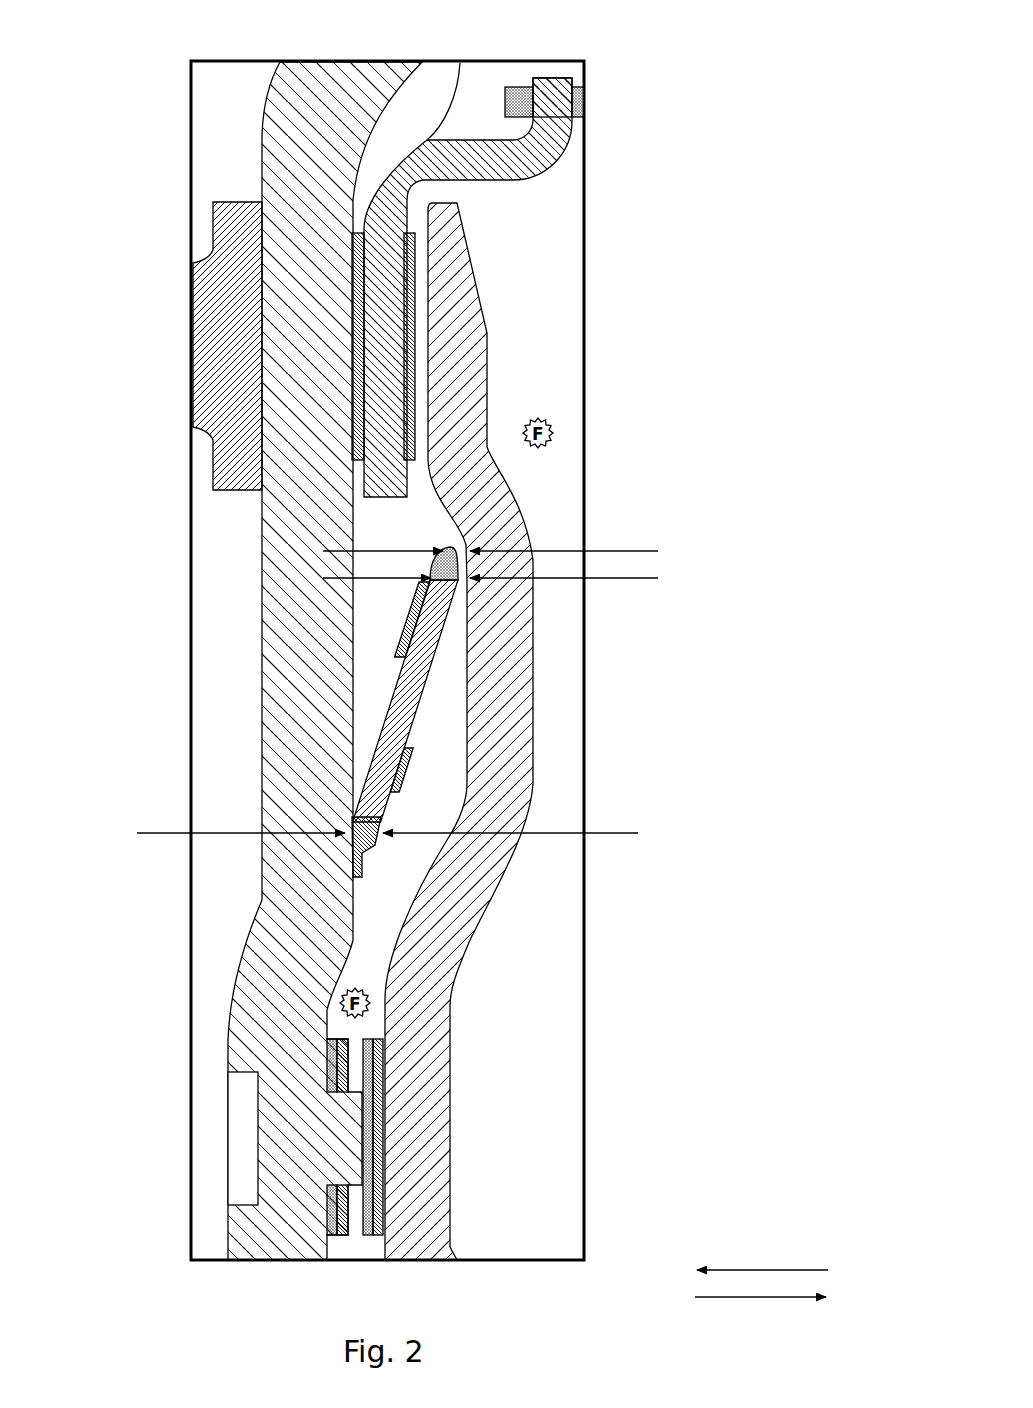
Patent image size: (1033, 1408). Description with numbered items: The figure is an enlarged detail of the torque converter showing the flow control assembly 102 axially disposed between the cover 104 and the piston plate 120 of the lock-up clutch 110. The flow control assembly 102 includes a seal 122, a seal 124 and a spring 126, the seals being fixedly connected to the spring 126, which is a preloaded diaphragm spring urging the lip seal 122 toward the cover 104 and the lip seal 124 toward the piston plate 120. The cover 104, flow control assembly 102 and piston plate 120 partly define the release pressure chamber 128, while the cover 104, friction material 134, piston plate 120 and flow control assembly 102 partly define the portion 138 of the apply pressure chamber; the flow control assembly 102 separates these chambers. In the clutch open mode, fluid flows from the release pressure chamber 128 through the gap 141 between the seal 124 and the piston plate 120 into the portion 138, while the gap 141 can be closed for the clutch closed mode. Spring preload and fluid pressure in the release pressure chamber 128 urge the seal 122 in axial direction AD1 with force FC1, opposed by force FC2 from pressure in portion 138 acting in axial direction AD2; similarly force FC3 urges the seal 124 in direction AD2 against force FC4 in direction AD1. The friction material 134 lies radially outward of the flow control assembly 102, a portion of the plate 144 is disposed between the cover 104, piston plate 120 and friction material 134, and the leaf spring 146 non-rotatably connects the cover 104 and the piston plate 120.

The flow control assembly 102 is at (438, 719).
The cover 104 is at (260, 935).
The lock-up clutch 110 is at (484, 249).
The piston plate 120 is at (457, 975).
The seal 122 is at (407, 772).
The seal 124 is at (410, 637).
The spring 126 is at (427, 677).
The release pressure chamber 128 is at (387, 900).
The friction material 134 is at (358, 233).
The portion of apply pressure chamber 138 is at (363, 727).
The gap 141 is at (600, 551).
The plate 144 is at (548, 78).
The leaf spring 146 is at (327, 1055).
The force FC1 is at (605, 833).
The force FC2 is at (165, 833).
The force FC3 is at (323, 580).
The force FC4 is at (620, 578).
The axial direction AD1 is at (737, 1270).
The axial direction AD2 is at (760, 1297).